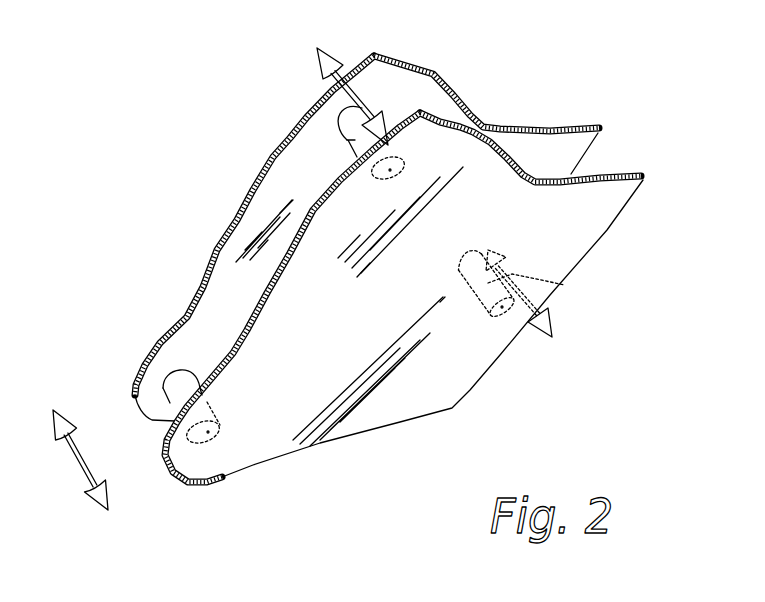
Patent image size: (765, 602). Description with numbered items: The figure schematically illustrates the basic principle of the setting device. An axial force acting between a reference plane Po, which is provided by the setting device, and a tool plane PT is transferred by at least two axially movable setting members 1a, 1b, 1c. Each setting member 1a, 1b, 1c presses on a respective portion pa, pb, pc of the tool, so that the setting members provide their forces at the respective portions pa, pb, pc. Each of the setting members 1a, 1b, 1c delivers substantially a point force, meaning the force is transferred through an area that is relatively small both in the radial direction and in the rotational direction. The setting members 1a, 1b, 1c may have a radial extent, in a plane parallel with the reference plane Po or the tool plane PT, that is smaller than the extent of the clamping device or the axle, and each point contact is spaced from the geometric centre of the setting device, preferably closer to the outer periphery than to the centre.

The setting member 1a is at (177, 390).
The setting member 1b is at (353, 138).
The setting member 1c is at (565, 285).
The reference plane Po is at (582, 125).
The tool plane PT is at (634, 173).
The portion of the tool pa is at (208, 432).
The portion of the tool pb is at (390, 170).
The portion of the tool pc is at (502, 307).